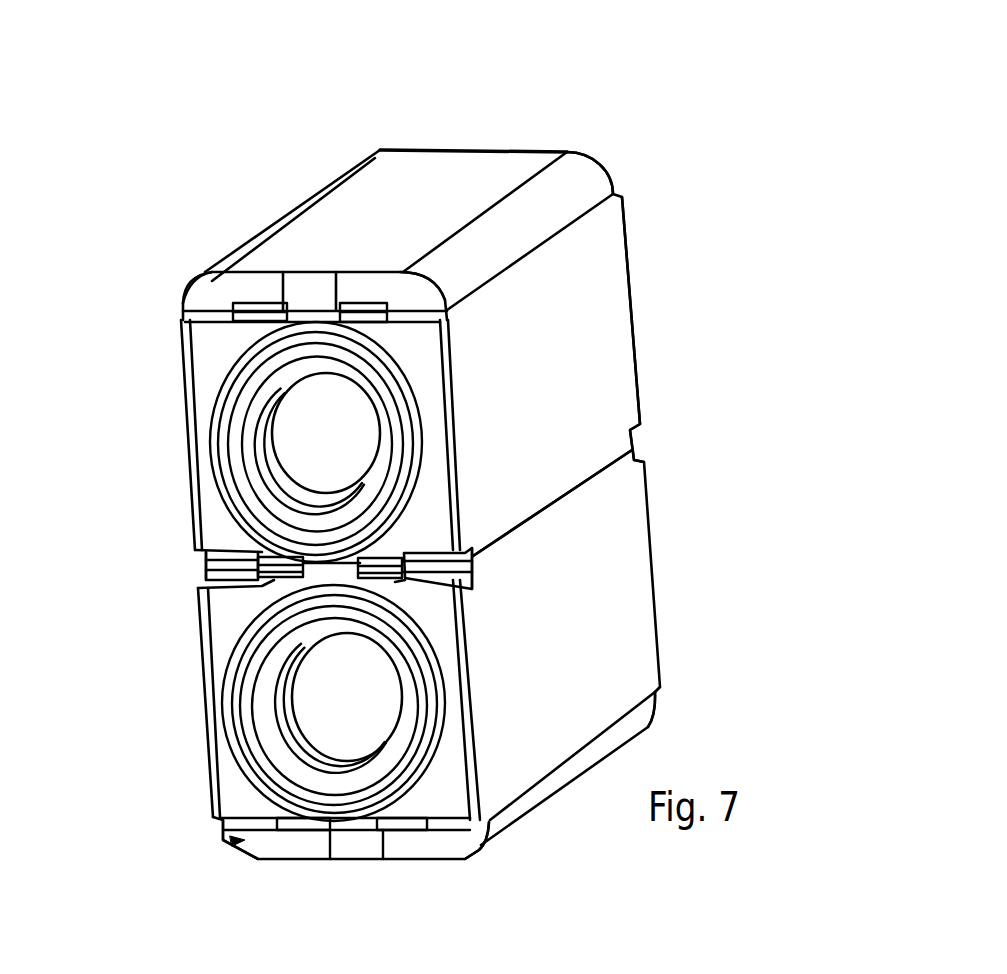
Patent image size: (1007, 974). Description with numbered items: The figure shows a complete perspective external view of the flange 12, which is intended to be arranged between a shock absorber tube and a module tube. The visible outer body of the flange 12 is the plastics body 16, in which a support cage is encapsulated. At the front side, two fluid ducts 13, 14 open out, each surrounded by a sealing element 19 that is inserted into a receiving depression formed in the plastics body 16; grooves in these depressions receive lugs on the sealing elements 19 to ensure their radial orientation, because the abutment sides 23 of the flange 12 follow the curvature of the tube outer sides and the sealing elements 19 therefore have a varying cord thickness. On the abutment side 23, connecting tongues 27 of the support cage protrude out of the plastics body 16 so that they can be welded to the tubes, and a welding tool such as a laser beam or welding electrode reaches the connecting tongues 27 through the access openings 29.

The flange 12 is at (420, 504).
The fluid duct 13 is at (325, 696).
The fluid duct 14 is at (296, 440).
The plastics body 16 is at (527, 760).
The sealing element 19 is at (230, 410).
The abutment side 23 is at (240, 840).
The connecting tongue 27 is at (367, 322).
The access opening 29 is at (616, 180).